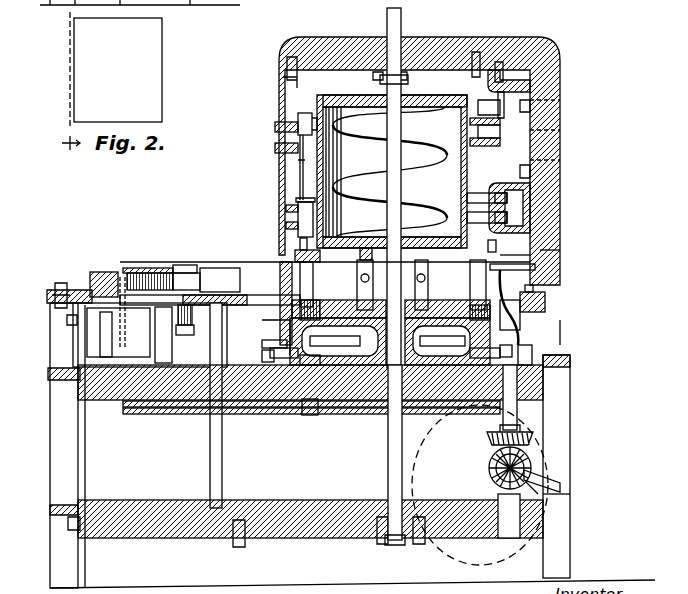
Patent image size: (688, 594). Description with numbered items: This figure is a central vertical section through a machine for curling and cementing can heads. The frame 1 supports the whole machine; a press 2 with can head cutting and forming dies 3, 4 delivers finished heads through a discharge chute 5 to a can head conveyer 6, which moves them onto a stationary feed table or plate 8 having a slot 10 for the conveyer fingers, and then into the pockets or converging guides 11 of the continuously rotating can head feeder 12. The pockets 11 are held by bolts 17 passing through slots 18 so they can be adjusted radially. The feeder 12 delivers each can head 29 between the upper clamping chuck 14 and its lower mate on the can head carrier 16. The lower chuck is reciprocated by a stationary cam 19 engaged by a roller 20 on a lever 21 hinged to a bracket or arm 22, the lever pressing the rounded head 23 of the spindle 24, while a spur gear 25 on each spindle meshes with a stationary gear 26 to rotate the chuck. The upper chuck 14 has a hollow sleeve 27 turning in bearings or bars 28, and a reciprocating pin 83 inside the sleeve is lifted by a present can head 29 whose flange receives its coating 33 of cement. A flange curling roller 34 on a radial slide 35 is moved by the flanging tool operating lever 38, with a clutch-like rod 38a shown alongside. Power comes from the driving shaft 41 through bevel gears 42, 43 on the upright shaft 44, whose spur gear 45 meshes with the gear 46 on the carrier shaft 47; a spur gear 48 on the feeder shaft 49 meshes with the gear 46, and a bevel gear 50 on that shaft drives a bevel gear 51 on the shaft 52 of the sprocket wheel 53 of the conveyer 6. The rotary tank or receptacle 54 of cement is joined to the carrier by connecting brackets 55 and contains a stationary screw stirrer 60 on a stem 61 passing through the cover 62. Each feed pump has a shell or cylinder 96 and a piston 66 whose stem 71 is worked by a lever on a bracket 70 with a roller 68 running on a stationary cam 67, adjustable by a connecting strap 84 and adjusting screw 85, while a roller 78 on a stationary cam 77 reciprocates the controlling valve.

The frame 1 is at (50, 378).
The press 2 is at (166, 38).
The can head cutting and forming die 3 is at (71, 150).
The can head cutting and forming die 4 is at (520, 318).
The discharge chute 5 is at (262, 345).
The can head conveyer 6 is at (110, 338).
The stationary feed table or plate 8 is at (132, 268).
The slot 10 is at (122, 276).
The pockets or converging guides 11 is at (152, 268).
The can head feeder 12 is at (202, 268).
The upper can holder or clamping chuck 14 is at (530, 252).
The can head carrier 16 is at (447, 289).
The bolt 17 is at (179, 265).
The slot 18 is at (339, 290).
The stationary cam 19 is at (309, 357).
The roller 20 is at (385, 354).
The lever 21 is at (385, 352).
The bracket or arm 22 is at (521, 318).
The rounded end or head 23 is at (525, 355).
The spindle 24 is at (536, 268).
The spur gear 25 is at (546, 300).
The stationary gear 26 is at (447, 327).
The hollow shaft or sleeve 27 is at (280, 303).
The bearings or bars 28 is at (294, 256).
The can head 29 is at (560, 252).
The coating 33 is at (359, 285).
The flange curling tool or roller 34 is at (352, 238).
The radially movable slide 35 is at (366, 250).
The flanging tool operating lever 38 is at (430, 285).
The clutch rod 38a is at (338, 341).
The driving shaft 41 is at (489, 468).
The bevel gear 42 is at (488, 456).
The bevel gear 43 is at (533, 442).
The upright shaft 44 is at (503, 420).
The spur gear 45 is at (540, 398).
The gear 46 is at (318, 415).
The shaft 47 is at (388, 440).
The spur gear 48 is at (300, 416).
The feeder shaft 49 is at (210, 448).
The bevel gear 50 is at (192, 325).
The bevel gear 51 is at (187, 344).
The shaft 52 is at (147, 335).
The sprocket wheel 53 is at (152, 335).
The rotary tank or receptacle 54 is at (470, 167).
The connecting bracket 55 is at (455, 220).
The stationary stirrer 60 is at (420, 147).
The stem 61 is at (394, 37).
The cover 62 is at (428, 95).
The piston 66 is at (296, 182).
The stationary cam 67 is at (476, 118).
The roller 68 is at (269, 137).
The bracket 70 is at (305, 113).
The stem 71 is at (298, 162).
The stationary cam 77 is at (509, 208).
The roller 78 is at (284, 208).
The reciprocating pin 83 is at (298, 245).
The connecting strap 84 is at (500, 131).
The adjusting screw 85 is at (507, 60).
The shell or cylinder 96 is at (296, 228).